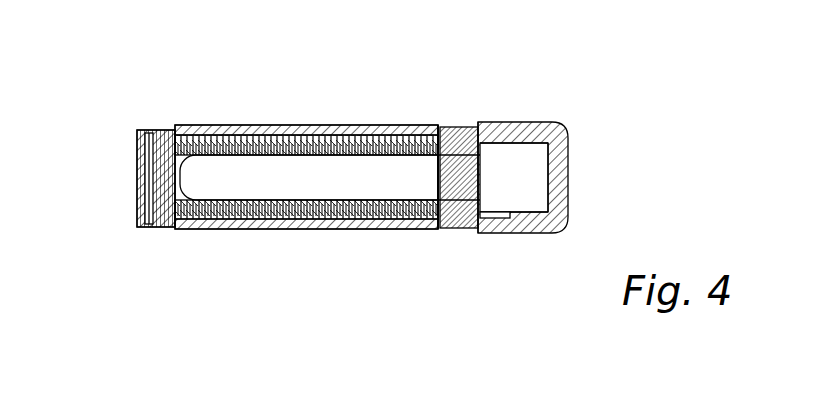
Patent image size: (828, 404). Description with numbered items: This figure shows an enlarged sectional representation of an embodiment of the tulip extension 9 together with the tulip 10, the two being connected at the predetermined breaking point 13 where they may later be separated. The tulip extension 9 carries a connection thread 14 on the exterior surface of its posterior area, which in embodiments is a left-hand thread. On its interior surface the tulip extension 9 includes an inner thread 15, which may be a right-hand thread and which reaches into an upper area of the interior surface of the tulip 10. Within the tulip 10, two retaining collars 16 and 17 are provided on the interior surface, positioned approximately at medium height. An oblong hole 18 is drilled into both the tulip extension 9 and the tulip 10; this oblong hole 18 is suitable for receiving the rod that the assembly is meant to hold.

The tulip extension 9 is at (250, 122).
The tulip 10 is at (515, 124).
The predetermined breaking point 13 is at (432, 126).
The connection thread 14 is at (146, 123).
The inner thread 15 is at (138, 188).
The retaining collar 16 is at (486, 124).
The retaining collar 17 is at (498, 214).
The oblong hole 18 is at (292, 172).